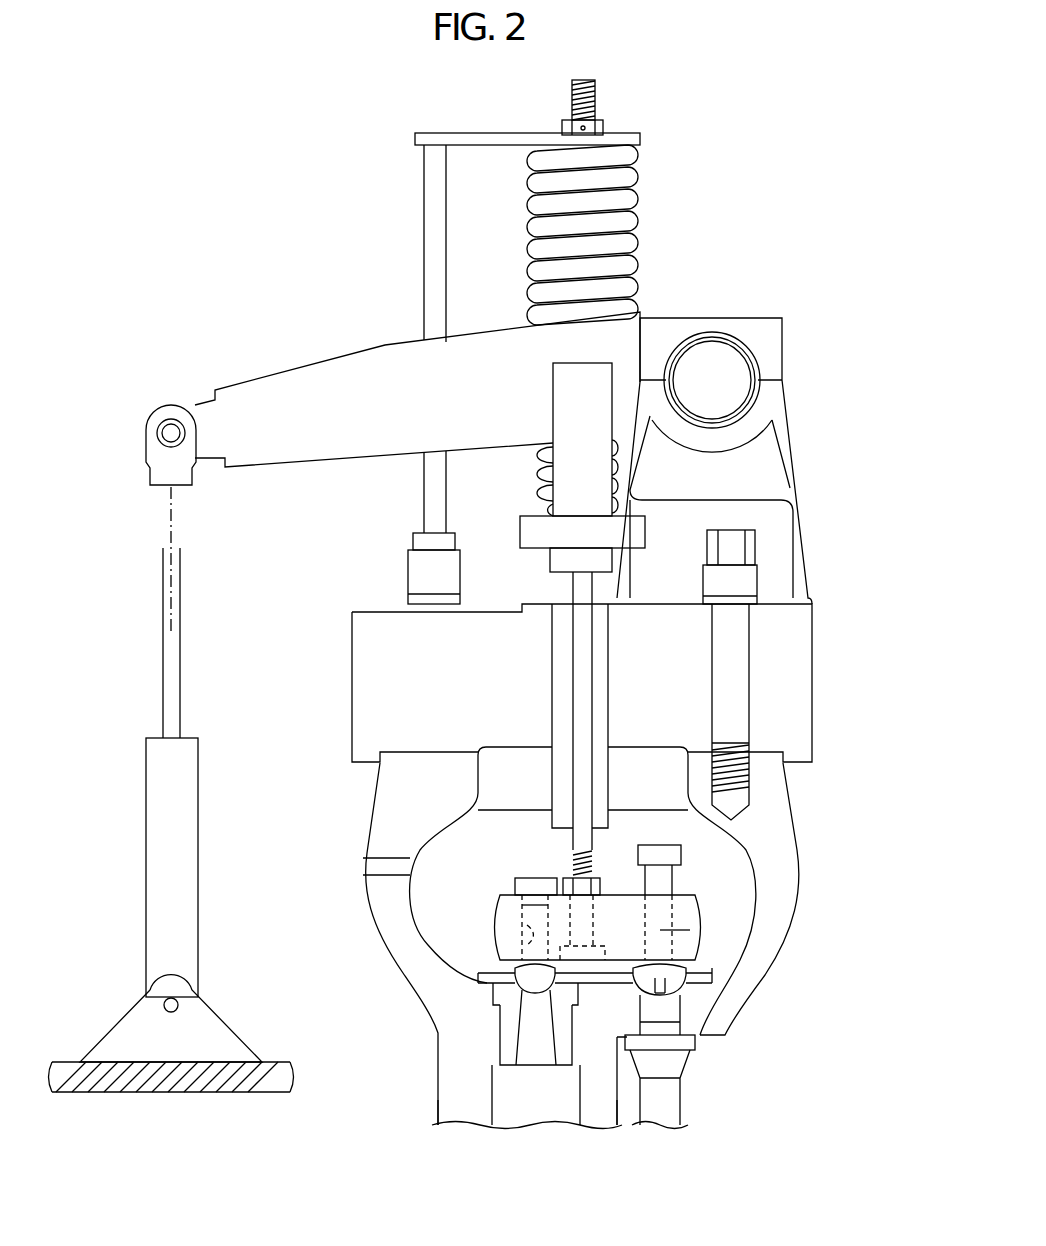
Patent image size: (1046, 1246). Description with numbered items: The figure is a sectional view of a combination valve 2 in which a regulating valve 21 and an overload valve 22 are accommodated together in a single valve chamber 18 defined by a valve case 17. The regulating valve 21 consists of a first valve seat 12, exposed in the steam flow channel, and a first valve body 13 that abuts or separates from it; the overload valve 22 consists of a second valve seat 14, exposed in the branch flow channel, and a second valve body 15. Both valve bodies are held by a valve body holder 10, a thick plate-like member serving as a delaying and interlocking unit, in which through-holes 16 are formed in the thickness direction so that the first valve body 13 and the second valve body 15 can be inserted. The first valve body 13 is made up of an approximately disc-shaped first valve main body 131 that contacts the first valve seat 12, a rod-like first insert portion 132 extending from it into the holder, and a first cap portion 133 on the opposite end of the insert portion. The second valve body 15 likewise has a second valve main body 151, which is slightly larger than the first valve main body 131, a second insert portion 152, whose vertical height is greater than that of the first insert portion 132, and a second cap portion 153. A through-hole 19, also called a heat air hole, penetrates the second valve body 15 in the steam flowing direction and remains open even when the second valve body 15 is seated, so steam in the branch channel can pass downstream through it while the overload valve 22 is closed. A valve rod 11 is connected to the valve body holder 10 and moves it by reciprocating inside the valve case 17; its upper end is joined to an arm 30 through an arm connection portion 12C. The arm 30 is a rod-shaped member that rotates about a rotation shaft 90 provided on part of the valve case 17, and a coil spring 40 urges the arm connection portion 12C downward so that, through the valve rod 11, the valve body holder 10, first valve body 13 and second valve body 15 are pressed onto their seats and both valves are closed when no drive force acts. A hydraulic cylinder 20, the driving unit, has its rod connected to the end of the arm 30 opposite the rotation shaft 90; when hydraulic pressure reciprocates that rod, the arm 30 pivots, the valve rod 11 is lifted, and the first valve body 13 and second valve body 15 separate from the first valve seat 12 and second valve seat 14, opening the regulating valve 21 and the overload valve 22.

The combination valve 2 is at (780, 200).
The coil spring 40 is at (637, 220).
The arm 30 is at (312, 375).
The rotation shaft 90 is at (742, 362).
The arm connection portion 12C is at (568, 463).
The valve rod 11 is at (585, 682).
The hydraulic cylinder 20 is at (147, 846).
The first cap portion 133 is at (535, 884).
The first insert portion 132 is at (530, 915).
The through-hole 16 is at (527, 935).
The first valve body 13 is at (402, 990).
The first valve main body 131 is at (525, 985).
The first valve seat 12 is at (507, 1033).
The second cap portion 153 is at (680, 853).
The valve case 17 is at (786, 838).
The valve chamber 18 is at (731, 887).
The valve body holder 10 is at (703, 918).
The second insert portion 152 is at (667, 937).
The second valve body 15 is at (791, 1003).
The second valve main body 151 is at (705, 968).
The second valve seat 14 is at (695, 995).
The through-hole (heat air hole) 19 is at (677, 988).
The regulating valve 21 is at (478, 1144).
The overload valve 22 is at (665, 1165).